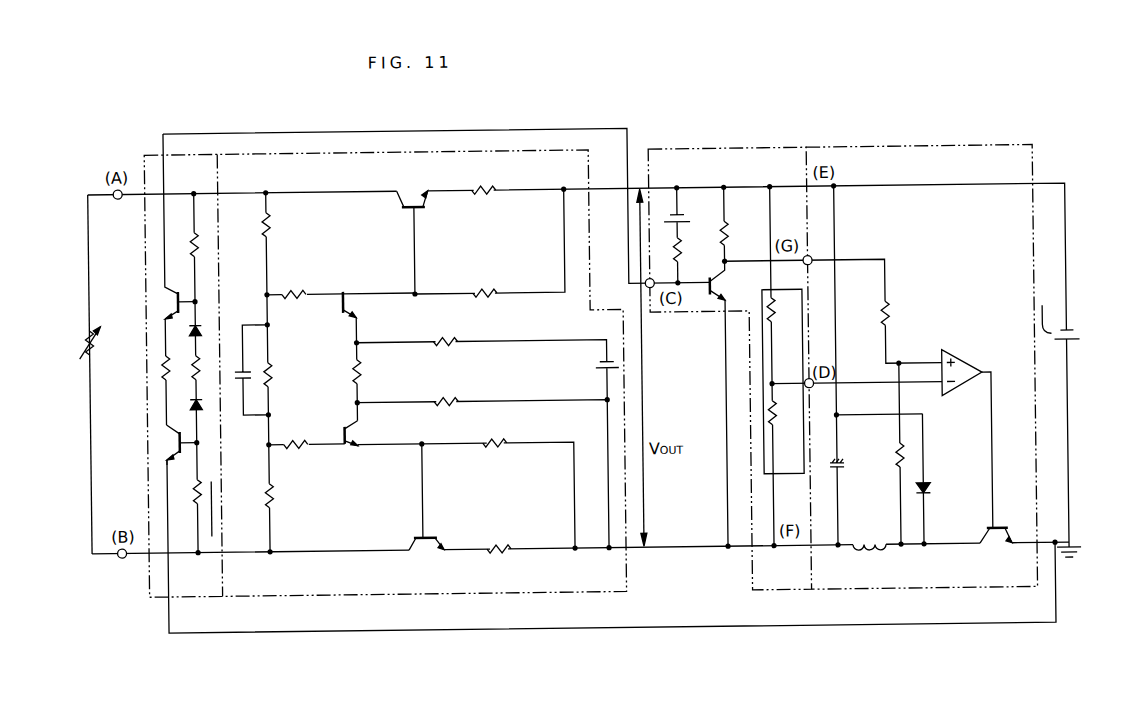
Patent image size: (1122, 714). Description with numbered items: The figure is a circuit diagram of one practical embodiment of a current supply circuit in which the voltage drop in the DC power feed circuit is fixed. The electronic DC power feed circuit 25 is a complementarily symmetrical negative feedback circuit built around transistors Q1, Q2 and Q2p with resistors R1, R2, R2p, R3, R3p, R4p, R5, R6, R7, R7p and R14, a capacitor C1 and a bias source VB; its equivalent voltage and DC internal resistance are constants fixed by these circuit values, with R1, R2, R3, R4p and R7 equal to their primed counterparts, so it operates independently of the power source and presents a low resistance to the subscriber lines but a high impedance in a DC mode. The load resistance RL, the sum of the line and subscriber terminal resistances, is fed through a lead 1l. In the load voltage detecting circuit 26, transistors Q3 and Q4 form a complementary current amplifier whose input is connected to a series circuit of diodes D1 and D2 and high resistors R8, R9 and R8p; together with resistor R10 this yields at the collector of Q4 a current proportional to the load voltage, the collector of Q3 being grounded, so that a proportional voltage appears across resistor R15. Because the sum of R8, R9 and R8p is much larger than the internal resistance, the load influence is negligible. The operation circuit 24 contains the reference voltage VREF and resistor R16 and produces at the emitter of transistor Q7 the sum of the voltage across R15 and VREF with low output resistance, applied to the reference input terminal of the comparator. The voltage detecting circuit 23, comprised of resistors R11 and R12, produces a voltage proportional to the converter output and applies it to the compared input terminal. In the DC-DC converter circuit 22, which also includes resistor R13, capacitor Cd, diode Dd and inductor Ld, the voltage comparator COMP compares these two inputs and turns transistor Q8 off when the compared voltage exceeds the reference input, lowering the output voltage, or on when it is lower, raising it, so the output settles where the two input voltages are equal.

The load voltage detecting circuit 26 is at (185, 150).
The DC power feed circuit 25 is at (545, 150).
The operation circuit 24 is at (700, 150).
The voltage detecting circuit 23 is at (763, 354).
The DC-DC converter circuit 22 is at (910, 150).
The lead wire 1l is at (211, 515).
The high resistor R8 is at (191, 238).
The high resistor R8p is at (192, 485).
The high resistor R9 is at (192, 374).
The resistor R10 is at (162, 362).
The load resistance RL is at (102, 343).
The transistor Q4 is at (176, 299).
The transistor Q3 is at (176, 445).
The diode D1 is at (203, 327).
The diode D2 is at (203, 403).
The resistor R14 is at (264, 224).
The capacitor C1 is at (253, 374).
The resistor R5 is at (273, 366).
The resistor R4p is at (255, 491).
The resistor R3 is at (292, 290).
The resistor R3p is at (290, 440).
The transistor Q2 is at (347, 290).
The transistor Q2' Q2p is at (352, 445).
The resistor R6 is at (353, 367).
The resistor R7 is at (443, 338).
The resistor R7p is at (444, 399).
The resistor R2p is at (487, 441).
The bias voltage source VB is at (595, 379).
The transistor Q1 is at (422, 200).
The resistor R1 is at (480, 186).
The resistor R2 is at (478, 289).
The reference voltage VREF is at (693, 212).
The resistor R15 is at (683, 253).
The resistor R16 is at (729, 235).
The transistor Q7 is at (716, 290).
The resistor R11 is at (784, 284).
The resistor R12 is at (768, 409).
The resistor R13 is at (903, 318).
The capacitor Cd is at (844, 470).
The diode Dd is at (929, 493).
The inductor Ld is at (869, 533).
The voltage comparator COMP is at (972, 431).
The transistor Q8 is at (988, 547).